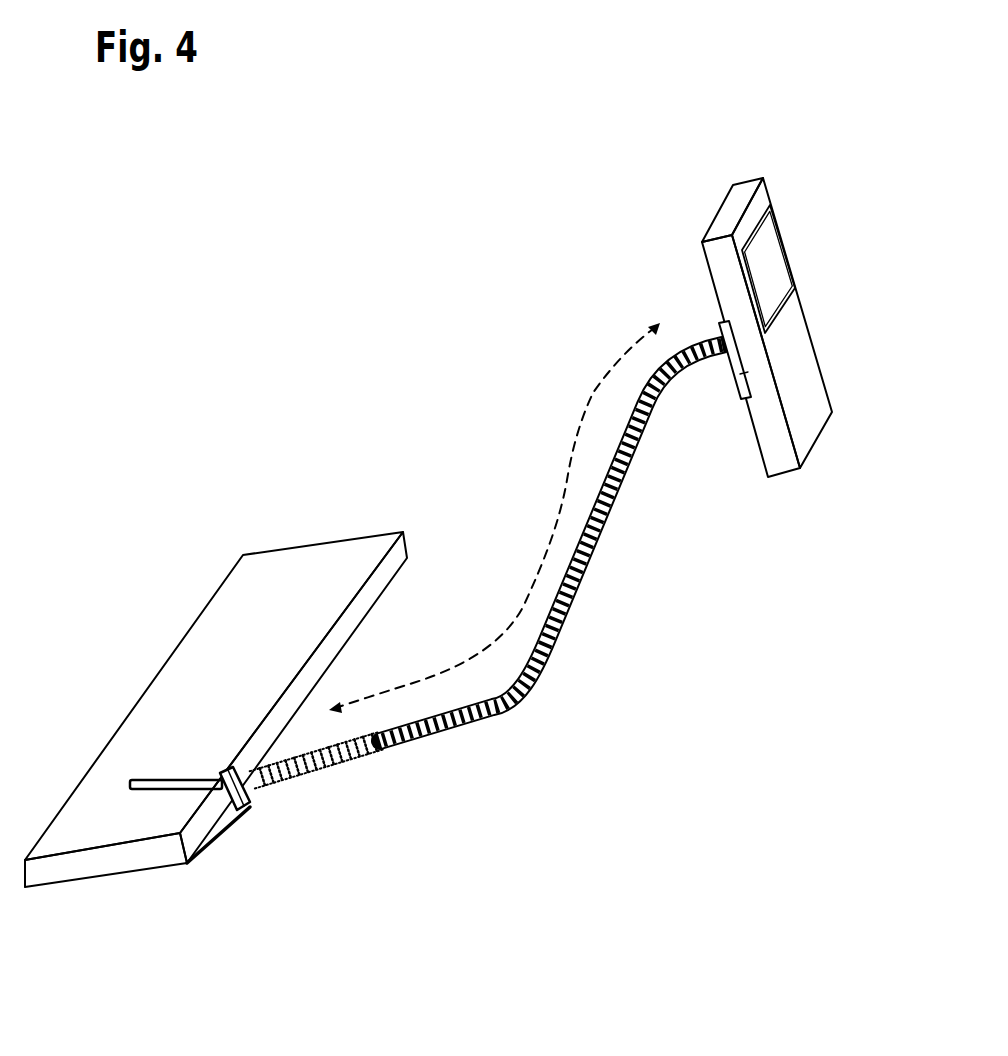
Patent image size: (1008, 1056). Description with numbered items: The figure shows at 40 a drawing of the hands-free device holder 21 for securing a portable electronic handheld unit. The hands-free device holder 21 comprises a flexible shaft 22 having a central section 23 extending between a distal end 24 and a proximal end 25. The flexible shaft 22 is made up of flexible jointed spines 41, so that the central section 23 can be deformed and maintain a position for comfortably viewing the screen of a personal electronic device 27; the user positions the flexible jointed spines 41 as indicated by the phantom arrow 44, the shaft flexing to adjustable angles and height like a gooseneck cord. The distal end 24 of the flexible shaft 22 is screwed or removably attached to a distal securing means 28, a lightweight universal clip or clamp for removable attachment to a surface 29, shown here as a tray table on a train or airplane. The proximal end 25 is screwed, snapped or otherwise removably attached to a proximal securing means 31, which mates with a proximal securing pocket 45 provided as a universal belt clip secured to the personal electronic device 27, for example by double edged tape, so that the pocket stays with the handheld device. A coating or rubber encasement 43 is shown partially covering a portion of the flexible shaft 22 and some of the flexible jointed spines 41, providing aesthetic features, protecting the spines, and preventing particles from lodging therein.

The hands-free device holder 21 is at (612, 566).
The flexible shaft 22 is at (612, 460).
The central section 23 is at (570, 628).
The distal end 24 is at (283, 750).
The proximal end 25 is at (682, 383).
The personal electronic device 27 is at (803, 410).
The distal securing means 28 is at (195, 773).
The surface 29 is at (266, 624).
The proximal securing means 31 is at (720, 335).
The hands-free device holder drawing 40 is at (316, 223).
The flexible jointed spines 41 is at (507, 713).
The coating or rubber encasement 43 is at (343, 767).
The phantom arrow 44 is at (523, 607).
The proximal securing pocket 45 is at (720, 318).